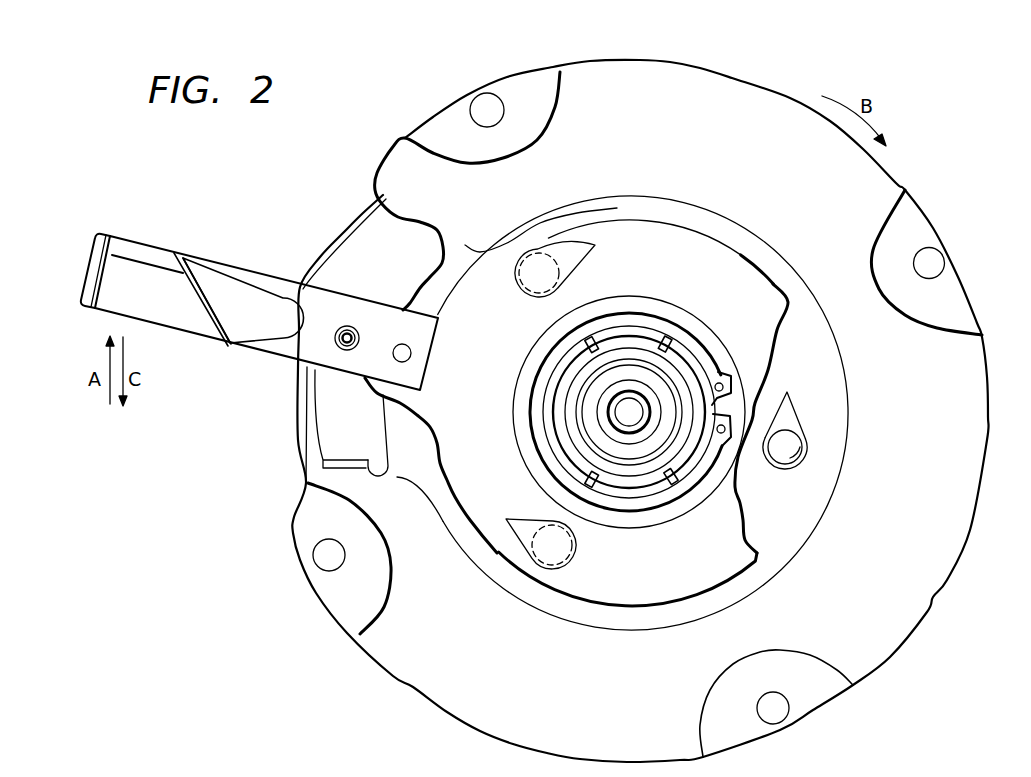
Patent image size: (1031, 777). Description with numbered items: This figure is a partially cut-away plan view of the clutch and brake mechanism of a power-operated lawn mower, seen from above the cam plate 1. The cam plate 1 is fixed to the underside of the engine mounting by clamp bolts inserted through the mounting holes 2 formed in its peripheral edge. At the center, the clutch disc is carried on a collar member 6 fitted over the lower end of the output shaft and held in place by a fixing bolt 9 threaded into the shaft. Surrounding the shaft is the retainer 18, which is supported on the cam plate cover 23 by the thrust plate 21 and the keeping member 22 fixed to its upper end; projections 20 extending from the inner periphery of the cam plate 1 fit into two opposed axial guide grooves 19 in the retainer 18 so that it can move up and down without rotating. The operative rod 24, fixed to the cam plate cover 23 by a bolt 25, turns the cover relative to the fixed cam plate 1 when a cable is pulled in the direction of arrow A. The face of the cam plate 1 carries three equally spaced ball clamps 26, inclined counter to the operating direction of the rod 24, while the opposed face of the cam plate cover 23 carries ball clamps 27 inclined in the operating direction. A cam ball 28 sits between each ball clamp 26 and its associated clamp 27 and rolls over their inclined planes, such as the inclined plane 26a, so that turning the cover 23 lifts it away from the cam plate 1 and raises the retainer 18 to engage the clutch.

The cam plate 1 is at (732, 78).
The mounting holes 2 is at (482, 102).
The collar member 6 is at (583, 442).
The fixing bolt 9 is at (617, 411).
The retainer 18 is at (552, 433).
The guide grooves 19 is at (593, 338).
The projections 20 is at (653, 342).
The thrust plate 21 is at (665, 312).
The keeping member 22 is at (628, 325).
The cam plate cover 23 is at (733, 547).
The operative rod 24 is at (255, 278).
The bolt 25 is at (350, 337).
The ball clamps 26 is at (807, 427).
The inclined plane 26a is at (790, 410).
The ball clamps 27 is at (590, 252).
The cam ball 28 is at (780, 458).